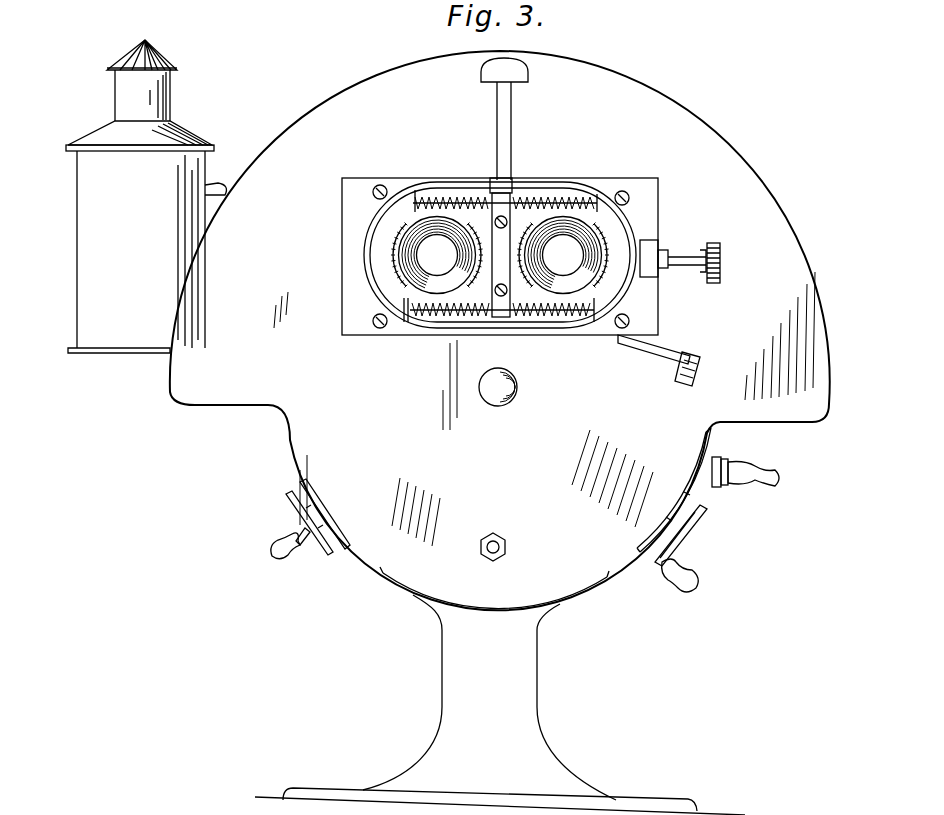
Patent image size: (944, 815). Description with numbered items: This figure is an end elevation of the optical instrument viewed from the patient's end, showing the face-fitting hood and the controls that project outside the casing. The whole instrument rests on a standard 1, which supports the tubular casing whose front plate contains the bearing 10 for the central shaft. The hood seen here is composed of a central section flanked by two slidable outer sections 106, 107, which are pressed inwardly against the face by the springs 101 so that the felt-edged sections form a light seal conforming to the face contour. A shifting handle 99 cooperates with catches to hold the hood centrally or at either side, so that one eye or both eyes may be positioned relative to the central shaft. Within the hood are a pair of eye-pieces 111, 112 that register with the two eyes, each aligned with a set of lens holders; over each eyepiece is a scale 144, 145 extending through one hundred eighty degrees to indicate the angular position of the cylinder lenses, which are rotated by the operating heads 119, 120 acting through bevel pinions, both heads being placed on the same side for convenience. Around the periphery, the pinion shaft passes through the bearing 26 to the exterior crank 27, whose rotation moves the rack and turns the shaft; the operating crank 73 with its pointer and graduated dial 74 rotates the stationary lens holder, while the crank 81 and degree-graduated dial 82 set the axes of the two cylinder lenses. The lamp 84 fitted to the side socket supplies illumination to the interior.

The standard 1 is at (528, 688).
The bearing 10 is at (519, 398).
The bearing 26 is at (715, 450).
The crank 27 is at (762, 468).
The operating crank 73 is at (275, 556).
The graduated dial 74 is at (321, 535).
The crank 81 is at (700, 575).
The dial 82 is at (708, 518).
The lamp 84 is at (146, 196).
The shifting handle 99 is at (513, 100).
The springs 101 is at (555, 200).
The outer section 106 is at (403, 256).
The outer section 107 is at (620, 236).
The eye-piece 111 is at (418, 268).
The eye-piece 112 is at (600, 282).
The operating head 119 is at (722, 263).
The operating head 120 is at (698, 350).
The scale 144 is at (398, 240).
The scale 145 is at (660, 250).